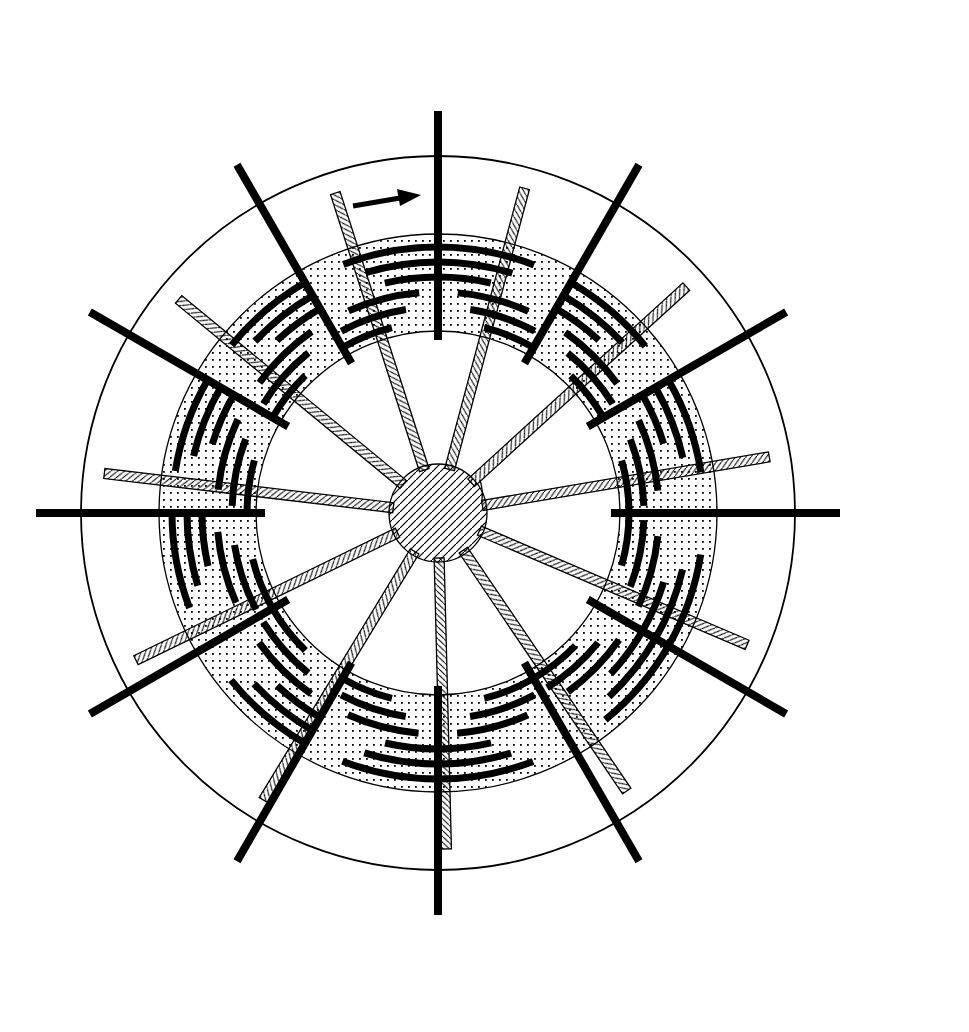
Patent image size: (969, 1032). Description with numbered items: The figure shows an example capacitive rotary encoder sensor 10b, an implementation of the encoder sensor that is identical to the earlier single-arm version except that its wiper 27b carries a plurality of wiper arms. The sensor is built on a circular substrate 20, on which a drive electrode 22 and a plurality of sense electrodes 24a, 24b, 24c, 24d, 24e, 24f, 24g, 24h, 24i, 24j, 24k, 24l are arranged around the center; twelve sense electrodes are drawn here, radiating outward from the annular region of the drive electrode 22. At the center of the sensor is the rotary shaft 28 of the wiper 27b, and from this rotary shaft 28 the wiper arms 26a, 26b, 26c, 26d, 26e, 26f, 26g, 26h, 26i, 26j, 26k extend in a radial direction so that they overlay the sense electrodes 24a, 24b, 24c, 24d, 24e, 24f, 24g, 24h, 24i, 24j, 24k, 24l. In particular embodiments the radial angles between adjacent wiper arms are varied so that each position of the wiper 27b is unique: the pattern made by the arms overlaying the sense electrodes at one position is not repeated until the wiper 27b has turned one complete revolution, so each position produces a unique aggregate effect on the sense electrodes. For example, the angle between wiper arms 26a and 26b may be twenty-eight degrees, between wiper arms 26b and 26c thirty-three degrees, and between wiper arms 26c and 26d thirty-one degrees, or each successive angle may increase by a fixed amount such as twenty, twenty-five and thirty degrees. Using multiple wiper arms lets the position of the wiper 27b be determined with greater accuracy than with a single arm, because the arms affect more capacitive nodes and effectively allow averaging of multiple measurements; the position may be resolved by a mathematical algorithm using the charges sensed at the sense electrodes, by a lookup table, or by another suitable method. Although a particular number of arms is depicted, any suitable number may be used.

The capacitive rotary encoder sensor 10b is at (203, 80).
The substrate 20 is at (168, 270).
The drive electrode 22 is at (178, 425).
The sense electrode 24a is at (442, 125).
The sense electrode 24b is at (644, 180).
The sense electrode 24c is at (782, 318).
The sense electrode 24d is at (826, 506).
The sense electrode 24e is at (785, 700).
The sense electrode 24f is at (646, 848).
The sense electrode 24g is at (446, 906).
The sense electrode 24h is at (236, 850).
The sense electrode 24i is at (102, 704).
The sense electrode 24j is at (58, 506).
The sense electrode 24k is at (98, 322).
The sense electrode 24l is at (236, 180).
The wiper arm 26a is at (402, 386).
The wiper arm 26b is at (490, 385).
The wiper arm 26c is at (541, 430).
The wiper arm 26d is at (554, 502).
The wiper arm 26e is at (553, 566).
The wiper arm 26f is at (517, 634).
The wiper arm 26g is at (437, 642).
The wiper arm 26h is at (362, 636).
The wiper arm 26i is at (312, 572).
The wiper arm 26j is at (300, 494).
The wiper arm 26k is at (345, 430).
The wiper 27b is at (486, 490).
The rotary shaft 28 is at (426, 527).